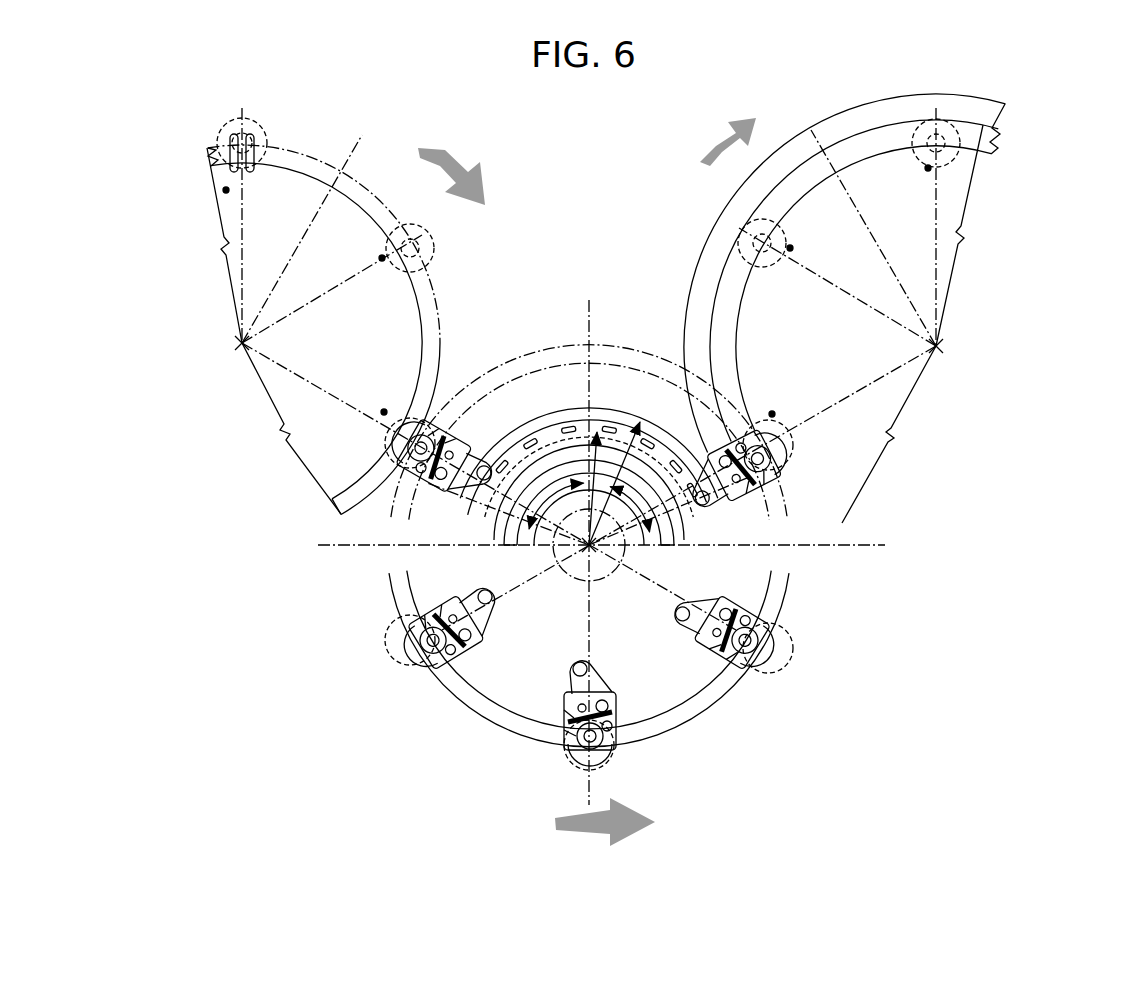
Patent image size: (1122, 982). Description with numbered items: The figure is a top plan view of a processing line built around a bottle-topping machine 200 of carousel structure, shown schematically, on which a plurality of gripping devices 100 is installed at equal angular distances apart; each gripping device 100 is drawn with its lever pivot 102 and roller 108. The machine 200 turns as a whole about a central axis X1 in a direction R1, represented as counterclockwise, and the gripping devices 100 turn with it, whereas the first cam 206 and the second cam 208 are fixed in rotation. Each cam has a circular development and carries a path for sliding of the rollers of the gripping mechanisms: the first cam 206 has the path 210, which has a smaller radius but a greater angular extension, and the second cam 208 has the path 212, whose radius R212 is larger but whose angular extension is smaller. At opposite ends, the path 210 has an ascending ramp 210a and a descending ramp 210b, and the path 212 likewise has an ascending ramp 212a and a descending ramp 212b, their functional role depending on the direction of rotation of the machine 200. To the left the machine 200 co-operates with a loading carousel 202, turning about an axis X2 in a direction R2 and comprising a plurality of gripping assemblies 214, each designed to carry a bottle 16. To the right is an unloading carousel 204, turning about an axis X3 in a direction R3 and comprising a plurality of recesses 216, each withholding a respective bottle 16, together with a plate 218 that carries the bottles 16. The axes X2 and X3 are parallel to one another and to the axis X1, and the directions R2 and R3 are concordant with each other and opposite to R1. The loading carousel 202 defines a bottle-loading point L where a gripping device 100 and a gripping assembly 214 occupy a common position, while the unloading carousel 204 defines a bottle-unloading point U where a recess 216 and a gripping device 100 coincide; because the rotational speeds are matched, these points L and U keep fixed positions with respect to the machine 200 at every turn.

The bottle 16 is at (224, 124).
The gripping device 100 is at (410, 492).
The latch lever pivot 102 is at (448, 662).
The latch roller 108 is at (408, 646).
The bottle-topping machine 200 is at (592, 340).
The loading carousel 202 is at (245, 438).
The unloading carousel 204 is at (870, 294).
The first cam 206 is at (392, 562).
The second cam 208 is at (548, 462).
The path 210 is at (700, 420).
The ascending ramp 210a is at (800, 540).
The descending ramp 210b is at (430, 540).
The path 212 is at (588, 408).
The ascending ramp 212a is at (728, 420).
The descending ramp 212b is at (540, 440).
The gripping assembly 214 is at (228, 200).
The recess 216 is at (775, 410).
The plate 218 is at (792, 150).
The radius of the path 212 R212 is at (800, 531).
The direction of rotation of the machine R1 is at (587, 822).
The direction of rotation of the loading carousel R2 is at (451, 171).
The direction of rotation of the unloading carousel R3 is at (713, 142).
The axis X1 is at (592, 550).
The axis X2 is at (240, 348).
The axis X3 is at (942, 352).
The bottle-loading point L is at (522, 485).
The bottle-unloading point U is at (706, 425).